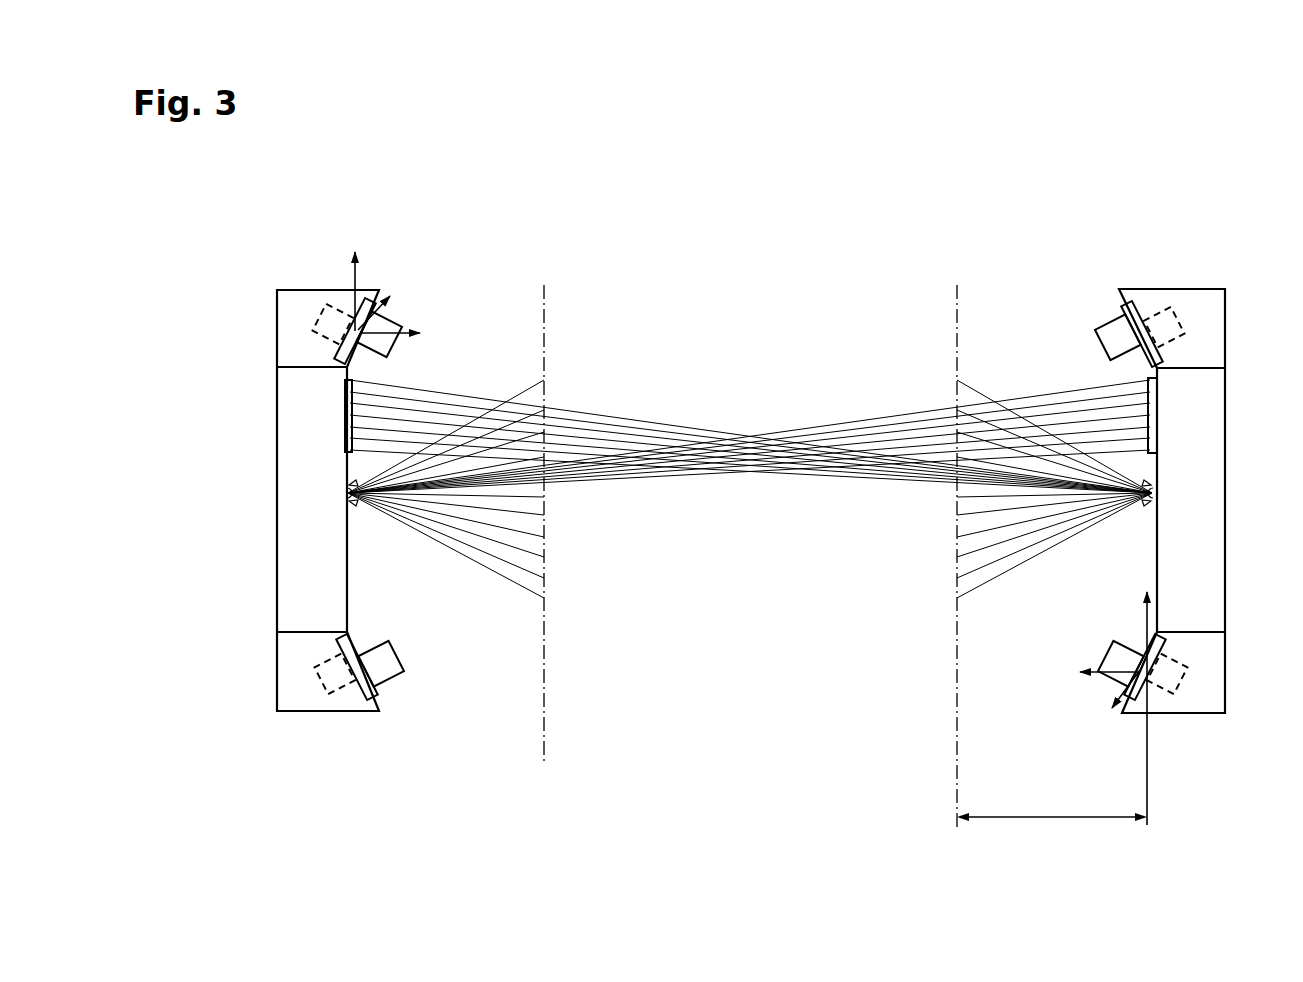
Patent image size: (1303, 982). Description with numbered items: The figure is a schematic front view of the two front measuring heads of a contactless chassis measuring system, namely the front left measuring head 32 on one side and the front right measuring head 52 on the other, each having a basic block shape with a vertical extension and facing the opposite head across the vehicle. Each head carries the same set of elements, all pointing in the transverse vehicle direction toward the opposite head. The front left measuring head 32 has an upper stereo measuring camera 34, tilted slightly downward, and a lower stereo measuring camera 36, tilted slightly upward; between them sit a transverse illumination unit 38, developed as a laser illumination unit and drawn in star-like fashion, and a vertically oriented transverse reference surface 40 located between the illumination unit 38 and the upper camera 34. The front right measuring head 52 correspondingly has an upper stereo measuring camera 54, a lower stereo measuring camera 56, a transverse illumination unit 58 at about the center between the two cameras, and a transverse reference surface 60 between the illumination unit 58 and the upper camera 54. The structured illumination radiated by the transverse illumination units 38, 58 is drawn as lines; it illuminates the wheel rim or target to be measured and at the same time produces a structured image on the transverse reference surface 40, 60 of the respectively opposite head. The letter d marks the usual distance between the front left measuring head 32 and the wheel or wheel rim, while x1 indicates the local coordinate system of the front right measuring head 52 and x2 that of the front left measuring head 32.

The front left measuring head 32 is at (1200, 737).
The upper stereo measuring camera 34 is at (1118, 340).
The lower stereo measuring camera 36 is at (1118, 650).
The transverse illumination unit 38 is at (1158, 493).
The transverse reference surface 40 is at (1158, 413).
The front right measuring head 52 is at (337, 740).
The upper stereo measuring camera 54 is at (380, 348).
The lower stereo measuring camera 56 is at (383, 662).
The transverse illumination unit 58 is at (345, 493).
The transverse reference surface 60 is at (345, 410).
The distance d is at (1053, 820).
The local coordinate system of front right measuring head x1 is at (343, 338).
The local coordinate system of front left measuring head x2 is at (1130, 672).